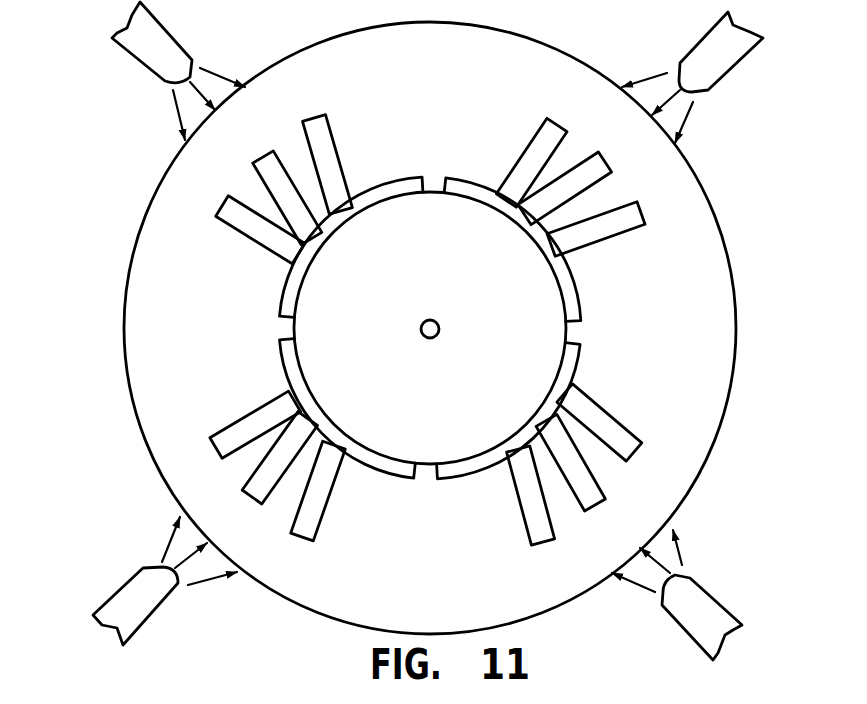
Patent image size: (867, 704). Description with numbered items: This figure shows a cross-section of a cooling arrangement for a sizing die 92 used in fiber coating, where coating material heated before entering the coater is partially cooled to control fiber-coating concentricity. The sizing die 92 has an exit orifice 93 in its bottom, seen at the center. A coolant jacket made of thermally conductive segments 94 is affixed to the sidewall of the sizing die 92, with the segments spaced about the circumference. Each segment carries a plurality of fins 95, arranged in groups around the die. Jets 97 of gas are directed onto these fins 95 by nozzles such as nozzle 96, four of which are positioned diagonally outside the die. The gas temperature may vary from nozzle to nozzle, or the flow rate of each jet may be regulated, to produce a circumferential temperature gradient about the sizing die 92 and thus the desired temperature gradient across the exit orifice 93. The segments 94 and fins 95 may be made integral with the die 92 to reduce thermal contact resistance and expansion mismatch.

The sizing die 92 is at (537, 303).
The exit orifice 93 is at (424, 322).
The segments 94 is at (570, 363).
The fins 95 is at (570, 192).
The nozzle 96 is at (150, 588).
The jets 97 is at (215, 75).